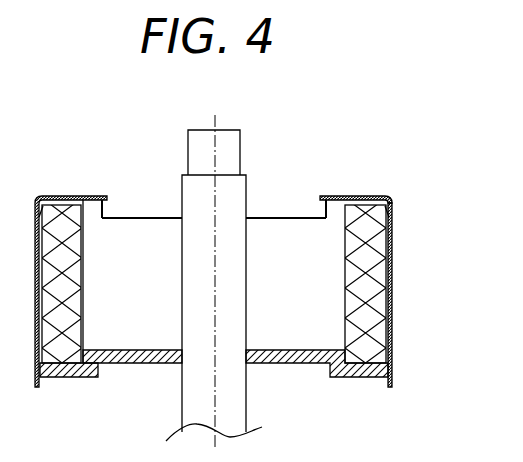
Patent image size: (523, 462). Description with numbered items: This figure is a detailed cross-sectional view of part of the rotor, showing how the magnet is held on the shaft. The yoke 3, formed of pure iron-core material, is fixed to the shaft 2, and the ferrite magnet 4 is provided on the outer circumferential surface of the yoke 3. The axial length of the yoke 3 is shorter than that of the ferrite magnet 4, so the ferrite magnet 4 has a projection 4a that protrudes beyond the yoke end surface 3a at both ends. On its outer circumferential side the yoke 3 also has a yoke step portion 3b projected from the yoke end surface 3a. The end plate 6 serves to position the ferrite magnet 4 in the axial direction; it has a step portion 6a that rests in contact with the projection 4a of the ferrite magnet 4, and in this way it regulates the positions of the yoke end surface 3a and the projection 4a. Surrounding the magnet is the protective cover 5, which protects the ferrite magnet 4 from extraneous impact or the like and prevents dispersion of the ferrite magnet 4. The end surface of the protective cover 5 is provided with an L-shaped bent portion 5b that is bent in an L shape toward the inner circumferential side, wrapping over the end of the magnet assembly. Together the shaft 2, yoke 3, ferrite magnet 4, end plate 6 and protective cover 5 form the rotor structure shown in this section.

The shaft 2 is at (193, 204).
The yoke 3 is at (325, 300).
The yoke end surface 3a is at (267, 218).
The yoke step portion 3b is at (337, 208).
The ferrite magnet 4 is at (372, 256).
The projection 4a is at (378, 217).
The protective cover 5 is at (390, 297).
The L-shaped bent portion 5b is at (368, 197).
The end plate 6 is at (135, 358).
The step portion 6a is at (72, 372).